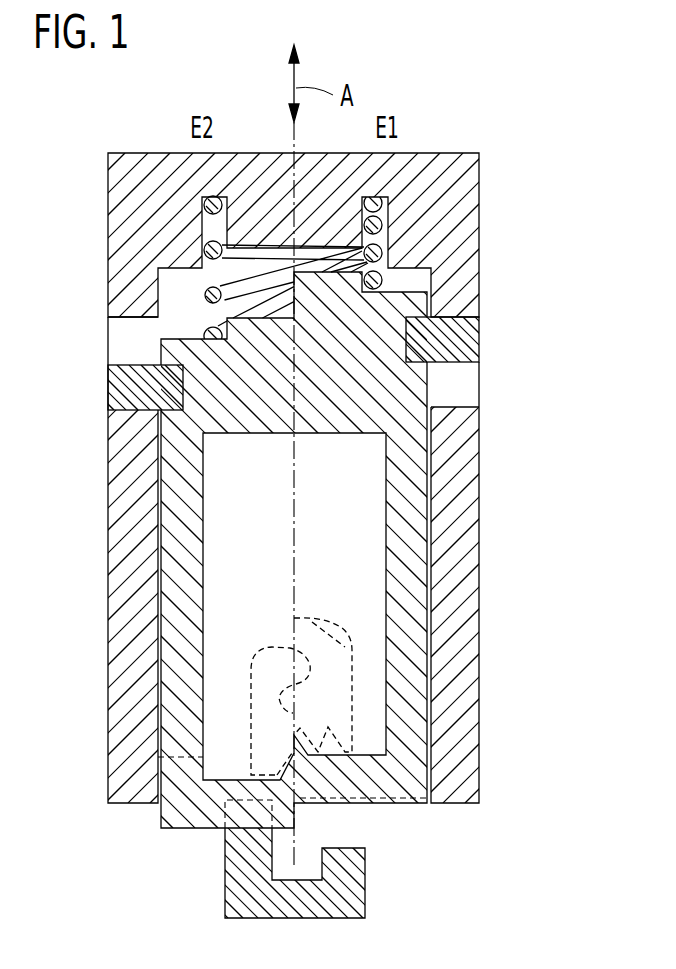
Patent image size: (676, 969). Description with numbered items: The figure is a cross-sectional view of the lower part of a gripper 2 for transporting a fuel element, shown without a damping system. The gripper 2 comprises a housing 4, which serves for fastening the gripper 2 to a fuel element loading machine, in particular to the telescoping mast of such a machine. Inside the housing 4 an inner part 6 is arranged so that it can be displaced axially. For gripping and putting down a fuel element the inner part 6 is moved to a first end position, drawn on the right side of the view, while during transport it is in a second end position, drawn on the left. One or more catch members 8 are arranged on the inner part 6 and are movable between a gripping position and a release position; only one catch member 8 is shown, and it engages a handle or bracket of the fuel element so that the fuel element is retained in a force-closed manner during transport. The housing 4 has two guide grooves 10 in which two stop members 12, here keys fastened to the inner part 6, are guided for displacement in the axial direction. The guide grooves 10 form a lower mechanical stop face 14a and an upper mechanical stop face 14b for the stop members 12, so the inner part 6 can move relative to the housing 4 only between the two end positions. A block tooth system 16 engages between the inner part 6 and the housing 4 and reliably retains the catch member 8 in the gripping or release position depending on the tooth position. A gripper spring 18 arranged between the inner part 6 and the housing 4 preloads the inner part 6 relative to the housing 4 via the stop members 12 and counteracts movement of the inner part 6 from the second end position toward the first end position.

The gripper 2 is at (594, 193).
The housing 4 is at (338, 478).
The inner part 6 is at (338, 550).
The catch member 8 is at (281, 859).
The guide groove 10 is at (292, 362).
The stop member 12 is at (283, 367).
The lower mechanical stop face 14a is at (489, 414).
The upper mechanical stop face 14b is at (96, 314).
The block tooth system 16 is at (386, 696).
The gripper spring 18 is at (363, 267).